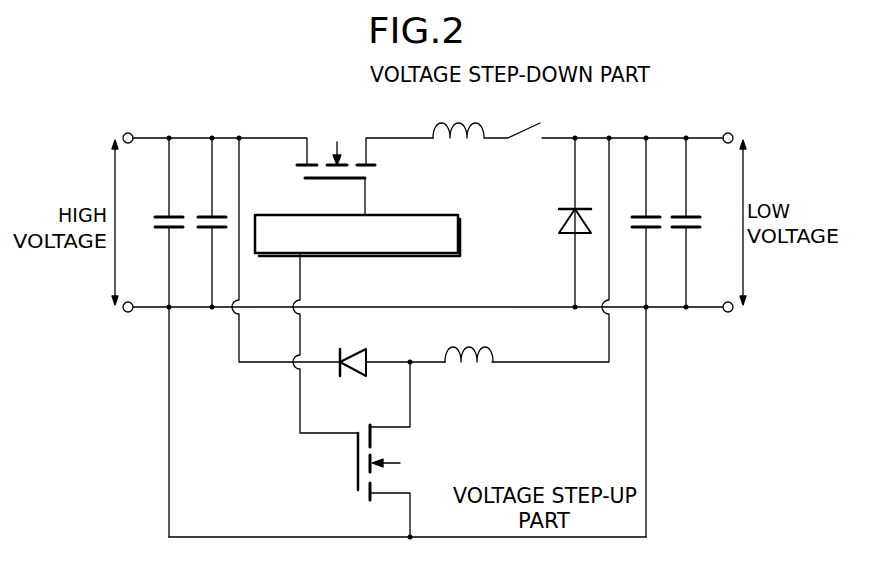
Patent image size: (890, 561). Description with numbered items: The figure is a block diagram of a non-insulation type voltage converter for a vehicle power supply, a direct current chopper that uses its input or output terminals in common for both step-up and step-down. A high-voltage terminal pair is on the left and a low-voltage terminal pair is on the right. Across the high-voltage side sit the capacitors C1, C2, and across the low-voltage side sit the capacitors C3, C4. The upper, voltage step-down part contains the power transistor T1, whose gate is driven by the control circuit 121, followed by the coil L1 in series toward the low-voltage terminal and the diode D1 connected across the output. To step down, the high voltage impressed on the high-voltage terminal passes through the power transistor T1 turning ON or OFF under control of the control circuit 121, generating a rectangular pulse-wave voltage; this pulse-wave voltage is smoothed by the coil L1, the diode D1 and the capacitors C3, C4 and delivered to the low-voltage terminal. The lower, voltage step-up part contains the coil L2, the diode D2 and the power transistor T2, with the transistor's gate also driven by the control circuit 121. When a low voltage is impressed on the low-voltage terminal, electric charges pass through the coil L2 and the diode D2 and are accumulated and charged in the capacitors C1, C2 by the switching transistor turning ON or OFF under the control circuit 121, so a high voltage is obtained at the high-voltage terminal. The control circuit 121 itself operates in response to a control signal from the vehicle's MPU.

The capacitor C1 is at (161, 337).
The capacitor C2 is at (204, 222).
The capacitor C3 is at (638, 337).
The capacitor C4 is at (678, 222).
The power transistor T1 is at (350, 178).
The power transistor T2 is at (367, 449).
The diode D1 is at (561, 222).
The diode D2 is at (392, 348).
The coil L1 is at (486, 115).
The coil L2 is at (469, 341).
The control circuit 121 is at (458, 241).